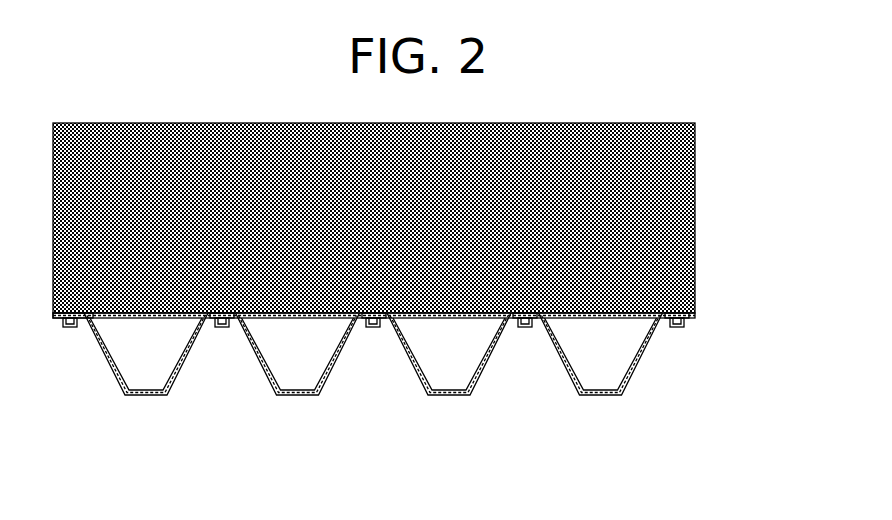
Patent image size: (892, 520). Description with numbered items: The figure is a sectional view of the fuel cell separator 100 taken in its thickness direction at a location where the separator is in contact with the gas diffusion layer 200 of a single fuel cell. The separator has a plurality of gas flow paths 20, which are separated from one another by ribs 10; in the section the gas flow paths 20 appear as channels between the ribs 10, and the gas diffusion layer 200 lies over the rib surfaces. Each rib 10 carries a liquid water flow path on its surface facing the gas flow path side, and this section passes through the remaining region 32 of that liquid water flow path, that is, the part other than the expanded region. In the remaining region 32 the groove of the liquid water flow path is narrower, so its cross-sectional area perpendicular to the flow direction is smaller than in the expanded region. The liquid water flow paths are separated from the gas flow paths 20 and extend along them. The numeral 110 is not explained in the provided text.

The gas diffusion layer 200 is at (697, 218).
The fuel cell separator 100 is at (697, 315).
The base plate 110 is at (62, 322).
The gas flow path 20 is at (146, 380).
The remaining region 32 is at (72, 330).
The rib 10 is at (218, 325).